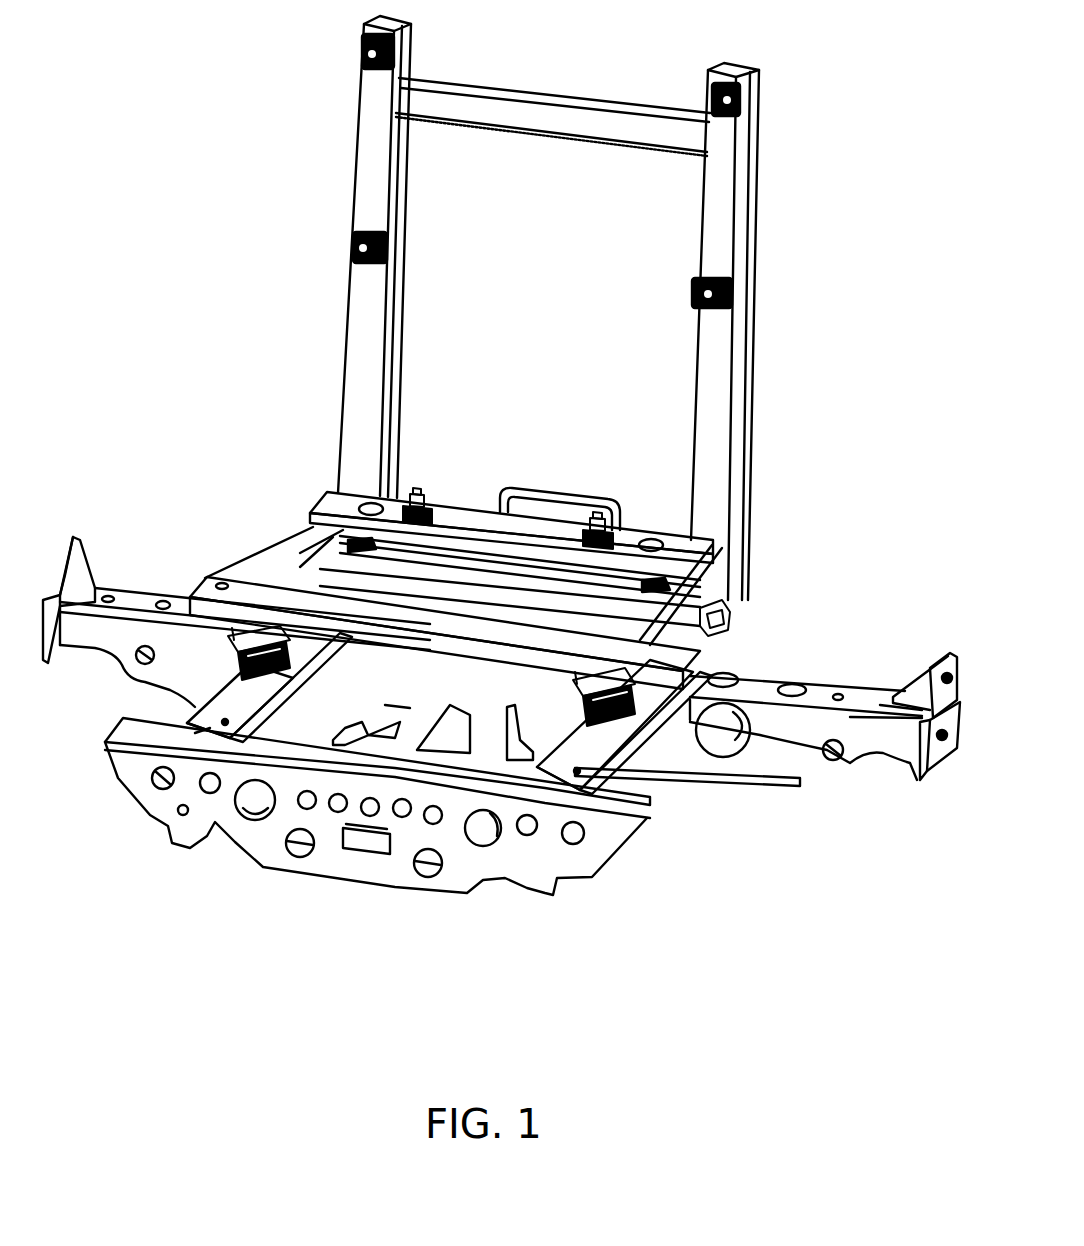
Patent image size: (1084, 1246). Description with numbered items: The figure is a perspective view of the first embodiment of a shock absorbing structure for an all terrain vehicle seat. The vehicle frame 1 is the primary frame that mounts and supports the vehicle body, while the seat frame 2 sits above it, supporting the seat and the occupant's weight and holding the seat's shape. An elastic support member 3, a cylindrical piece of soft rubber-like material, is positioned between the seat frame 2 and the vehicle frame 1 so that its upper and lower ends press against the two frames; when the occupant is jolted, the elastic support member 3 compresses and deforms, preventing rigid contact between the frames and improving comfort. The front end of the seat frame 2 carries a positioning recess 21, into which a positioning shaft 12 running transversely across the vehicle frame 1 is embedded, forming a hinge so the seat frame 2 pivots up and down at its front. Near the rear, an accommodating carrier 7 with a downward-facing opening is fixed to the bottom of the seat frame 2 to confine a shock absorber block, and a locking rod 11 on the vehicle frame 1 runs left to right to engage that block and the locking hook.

The vehicle frame 1 is at (660, 797).
The seat frame 2 is at (678, 592).
The elastic support member 3 is at (727, 637).
The accommodating carrier 7 is at (602, 513).
The locking rod 11 is at (730, 613).
The positioning shaft 12 is at (268, 695).
The positioning recess 21 is at (208, 750).